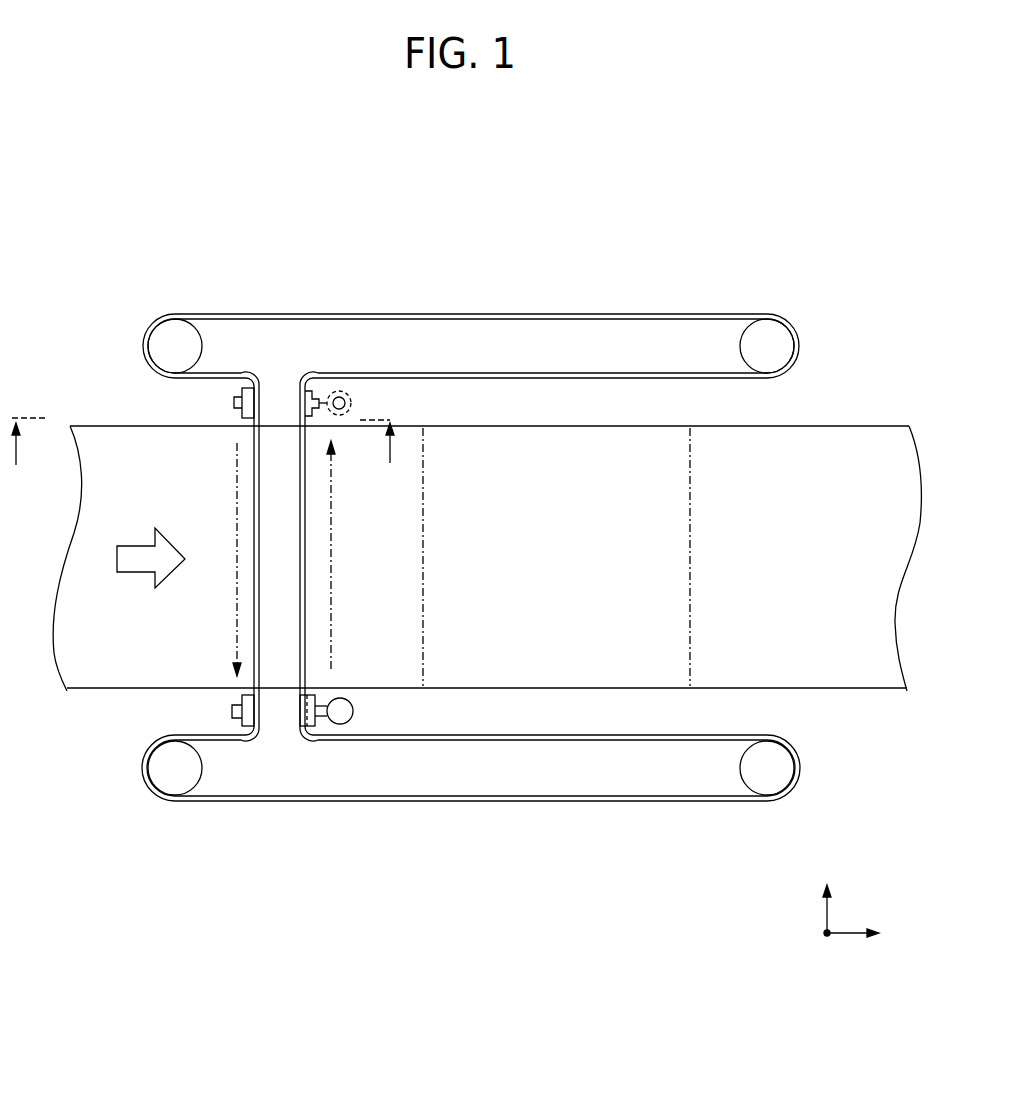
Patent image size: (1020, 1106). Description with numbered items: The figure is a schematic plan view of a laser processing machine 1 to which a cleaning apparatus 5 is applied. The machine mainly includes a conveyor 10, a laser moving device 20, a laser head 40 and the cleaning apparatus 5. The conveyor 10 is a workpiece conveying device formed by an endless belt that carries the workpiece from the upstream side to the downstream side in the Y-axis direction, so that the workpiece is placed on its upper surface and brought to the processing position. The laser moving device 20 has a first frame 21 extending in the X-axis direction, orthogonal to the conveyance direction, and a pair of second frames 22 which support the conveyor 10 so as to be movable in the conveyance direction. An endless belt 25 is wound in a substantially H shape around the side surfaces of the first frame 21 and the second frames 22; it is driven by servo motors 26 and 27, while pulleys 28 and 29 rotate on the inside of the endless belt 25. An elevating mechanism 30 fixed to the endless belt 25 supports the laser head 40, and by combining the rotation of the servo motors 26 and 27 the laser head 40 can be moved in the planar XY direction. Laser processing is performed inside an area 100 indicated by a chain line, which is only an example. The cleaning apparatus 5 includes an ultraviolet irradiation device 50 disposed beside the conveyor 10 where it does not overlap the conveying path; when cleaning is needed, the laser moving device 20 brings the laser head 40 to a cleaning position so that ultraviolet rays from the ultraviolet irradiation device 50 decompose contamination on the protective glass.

The laser processing machine 1 is at (750, 210).
The cleaning apparatus 5 is at (368, 385).
The conveyor 10 is at (883, 404).
The area 100 is at (690, 492).
The laser moving device 20 is at (593, 298).
The first frame 21 is at (282, 539).
The second frames 22 is at (384, 325).
The endless belt 25 is at (267, 309).
The servo motor 26 is at (177, 322).
The servo motor 27 is at (175, 788).
The pulley 28 is at (765, 325).
The pulley 29 is at (768, 780).
The elevating mechanism 30 is at (318, 696).
The laser head 40 is at (352, 706).
The ultraviolet irradiation device 50 is at (350, 399).